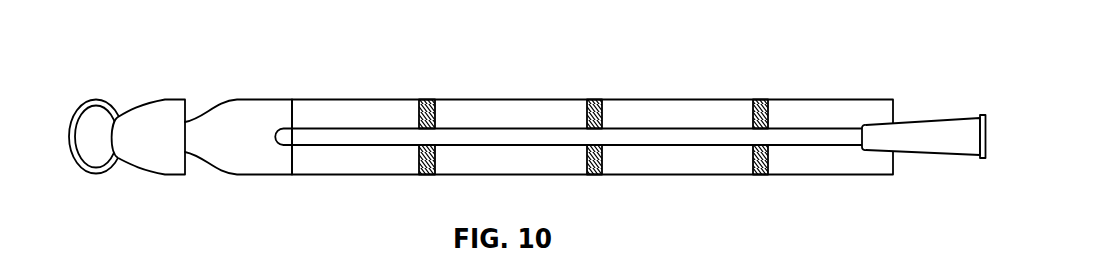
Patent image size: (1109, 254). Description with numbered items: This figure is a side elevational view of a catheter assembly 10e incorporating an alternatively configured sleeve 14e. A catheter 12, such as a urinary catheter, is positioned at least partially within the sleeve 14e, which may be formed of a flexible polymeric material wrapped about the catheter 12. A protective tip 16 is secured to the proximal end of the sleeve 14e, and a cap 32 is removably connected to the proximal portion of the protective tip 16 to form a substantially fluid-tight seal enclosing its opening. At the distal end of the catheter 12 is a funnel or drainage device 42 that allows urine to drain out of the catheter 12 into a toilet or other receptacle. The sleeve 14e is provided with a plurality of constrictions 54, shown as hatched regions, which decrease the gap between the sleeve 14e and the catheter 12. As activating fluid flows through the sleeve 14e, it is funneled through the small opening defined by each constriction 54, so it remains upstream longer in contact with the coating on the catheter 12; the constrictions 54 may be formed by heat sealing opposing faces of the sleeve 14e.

The catheter assembly 10e is at (327, 27).
The catheter 12 is at (677, 127).
The sleeve 14e is at (505, 176).
The protective tip 16 is at (237, 92).
The cap 32 is at (140, 106).
The funnel or drainage device 42 is at (955, 120).
The constrictions 54 is at (428, 99).